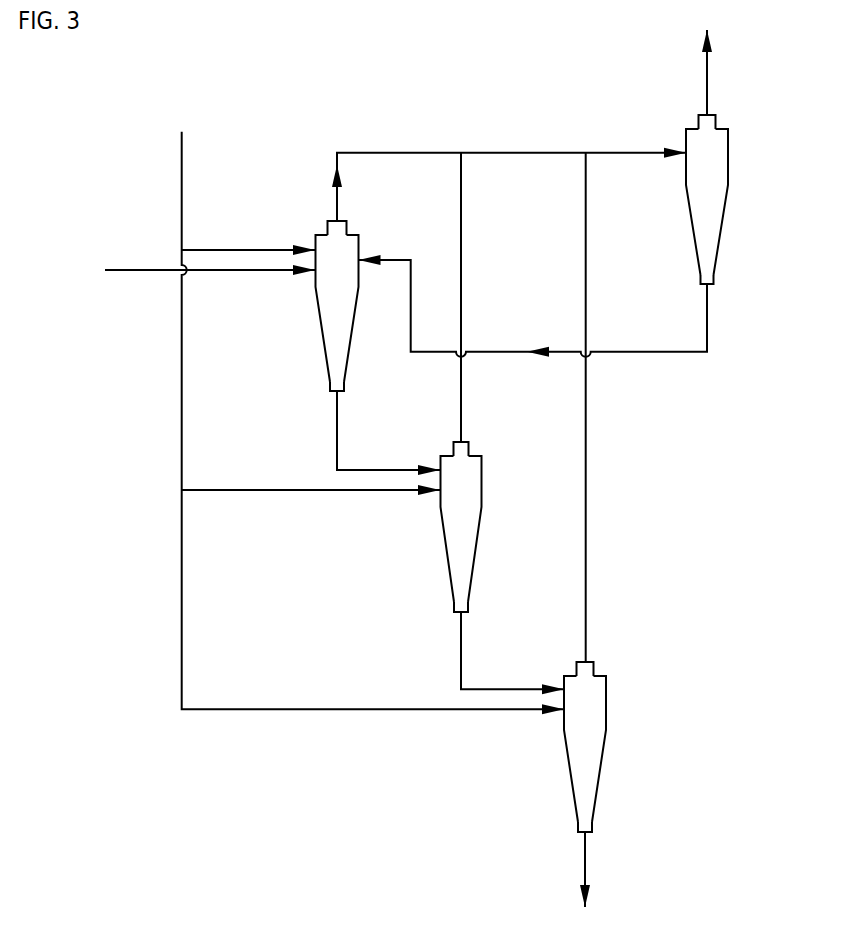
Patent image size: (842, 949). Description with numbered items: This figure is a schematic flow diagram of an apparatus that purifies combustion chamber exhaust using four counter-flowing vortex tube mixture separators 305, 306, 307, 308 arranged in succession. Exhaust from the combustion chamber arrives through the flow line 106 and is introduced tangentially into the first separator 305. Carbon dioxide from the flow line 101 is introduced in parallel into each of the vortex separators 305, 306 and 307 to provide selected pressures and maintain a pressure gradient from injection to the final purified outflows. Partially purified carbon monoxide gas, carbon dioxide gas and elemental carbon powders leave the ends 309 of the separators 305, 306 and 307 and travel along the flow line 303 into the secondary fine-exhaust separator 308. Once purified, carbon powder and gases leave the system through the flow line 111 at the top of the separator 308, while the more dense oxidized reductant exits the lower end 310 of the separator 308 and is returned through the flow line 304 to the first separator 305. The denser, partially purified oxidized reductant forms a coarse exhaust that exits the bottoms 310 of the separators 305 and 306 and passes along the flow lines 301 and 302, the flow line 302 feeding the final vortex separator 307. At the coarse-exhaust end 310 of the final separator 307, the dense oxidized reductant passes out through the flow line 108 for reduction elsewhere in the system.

The flow line 101 is at (181, 194).
The flow line 106 is at (138, 272).
The flow line 108 is at (586, 848).
The flow line 111 is at (707, 78).
The flow line 301 is at (362, 470).
The flow line 302 is at (490, 689).
The flow line 303 is at (505, 152).
The flow line 304 is at (706, 332).
The first vortex separator 305 is at (322, 331).
The vortex separator 306 is at (444, 549).
The final vortex separator 307 is at (567, 748).
The secondary fine-exhaust separator 308 is at (723, 227).
The ends 309 is at (337, 228).
The lower end 310 is at (336, 375).